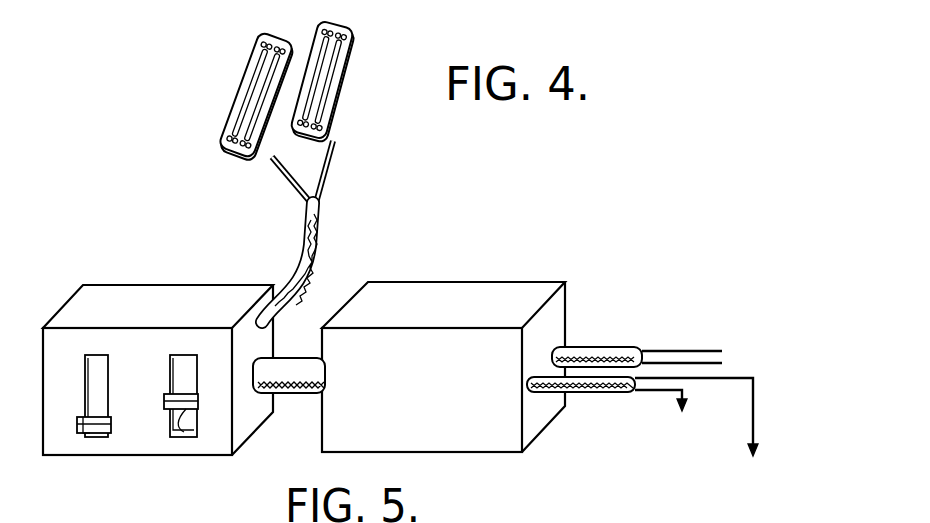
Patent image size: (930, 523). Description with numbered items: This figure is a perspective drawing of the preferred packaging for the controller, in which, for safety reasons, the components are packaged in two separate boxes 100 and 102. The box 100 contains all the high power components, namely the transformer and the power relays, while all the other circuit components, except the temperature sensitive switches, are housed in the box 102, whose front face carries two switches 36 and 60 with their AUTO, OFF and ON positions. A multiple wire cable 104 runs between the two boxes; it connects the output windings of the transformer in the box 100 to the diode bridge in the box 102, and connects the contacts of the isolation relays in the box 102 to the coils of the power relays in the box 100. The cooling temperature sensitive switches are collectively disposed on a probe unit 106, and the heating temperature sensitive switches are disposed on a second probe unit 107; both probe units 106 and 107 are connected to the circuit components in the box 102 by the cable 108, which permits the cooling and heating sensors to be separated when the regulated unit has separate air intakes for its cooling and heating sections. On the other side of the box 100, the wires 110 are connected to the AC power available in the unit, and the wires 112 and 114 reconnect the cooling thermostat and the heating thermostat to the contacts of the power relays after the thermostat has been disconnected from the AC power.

The fan switch 36 is at (102, 435).
The heating/cooling mode switch 60 is at (183, 435).
The box 100 is at (485, 287).
The box 102 is at (147, 303).
The multiple wire cable 104 is at (303, 393).
The probe unit 106 is at (238, 98).
The probe unit 107 is at (342, 72).
The cable 108 is at (322, 220).
The wires 110 is at (667, 352).
The wire 112 is at (684, 400).
The wire 114 is at (754, 410).